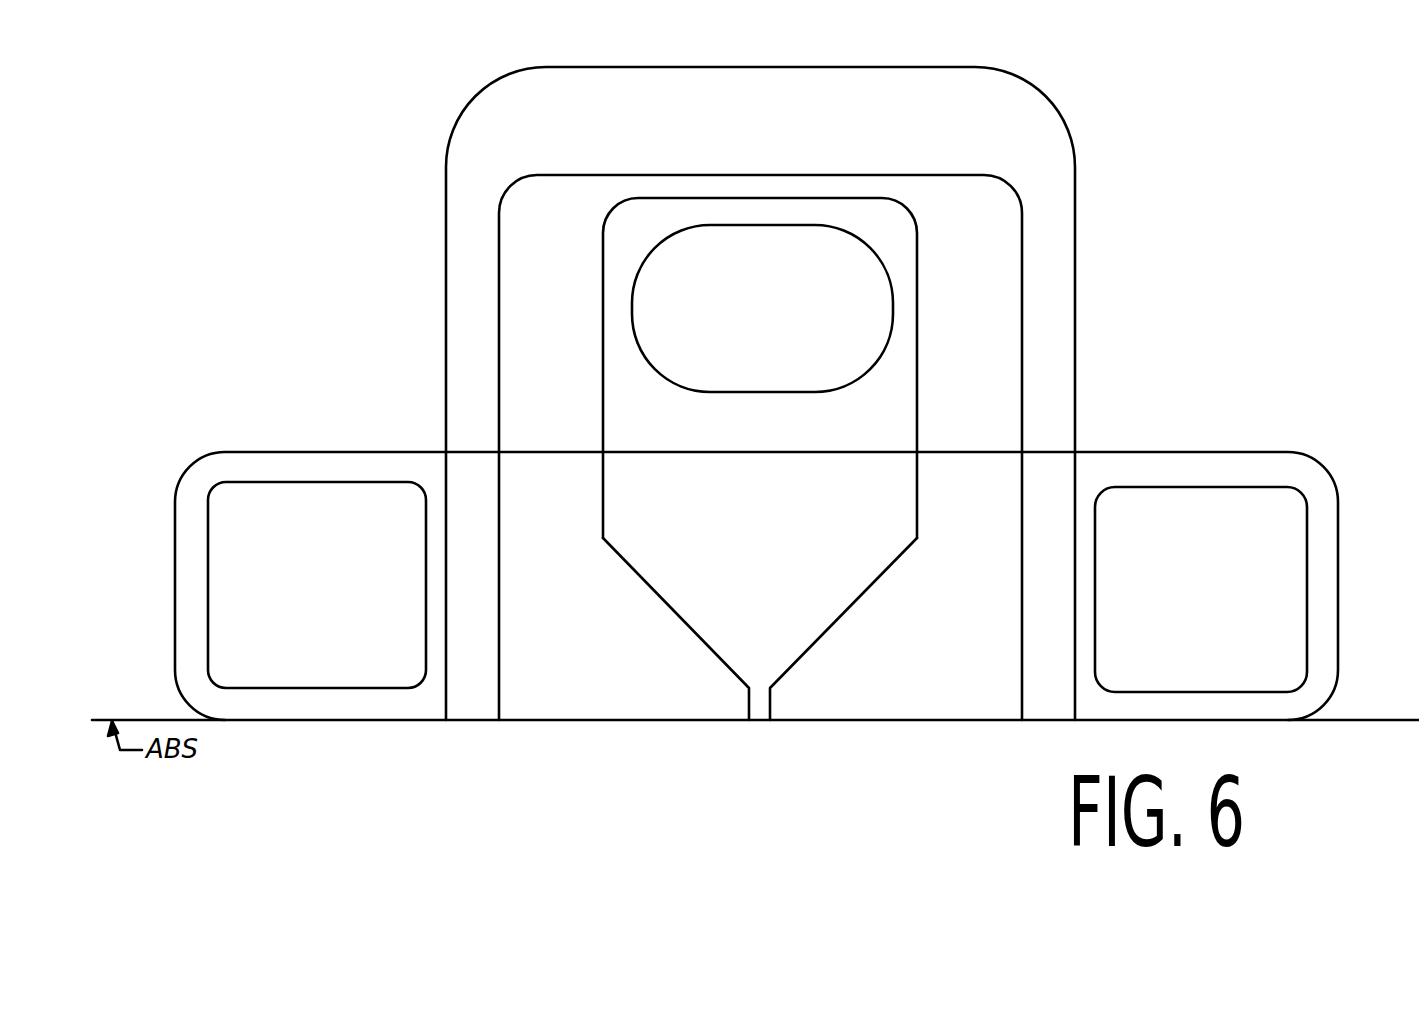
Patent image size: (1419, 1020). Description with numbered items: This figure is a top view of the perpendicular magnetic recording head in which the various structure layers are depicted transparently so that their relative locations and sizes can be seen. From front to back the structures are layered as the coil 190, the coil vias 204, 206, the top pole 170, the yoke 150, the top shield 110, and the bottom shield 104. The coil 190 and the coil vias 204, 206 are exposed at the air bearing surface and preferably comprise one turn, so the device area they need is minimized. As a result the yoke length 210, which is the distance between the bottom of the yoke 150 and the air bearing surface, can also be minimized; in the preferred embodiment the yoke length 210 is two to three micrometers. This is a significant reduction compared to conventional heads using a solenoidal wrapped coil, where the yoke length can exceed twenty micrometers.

The bottom shield 104 is at (758, 137).
The top shield 110 is at (524, 299).
The yoke 150 is at (735, 315).
The top pole 170 is at (737, 434).
The coil 190 is at (1288, 456).
The coil via 204 is at (273, 602).
The coil via 206 is at (1172, 594).
The yoke length 210 is at (593, 387).